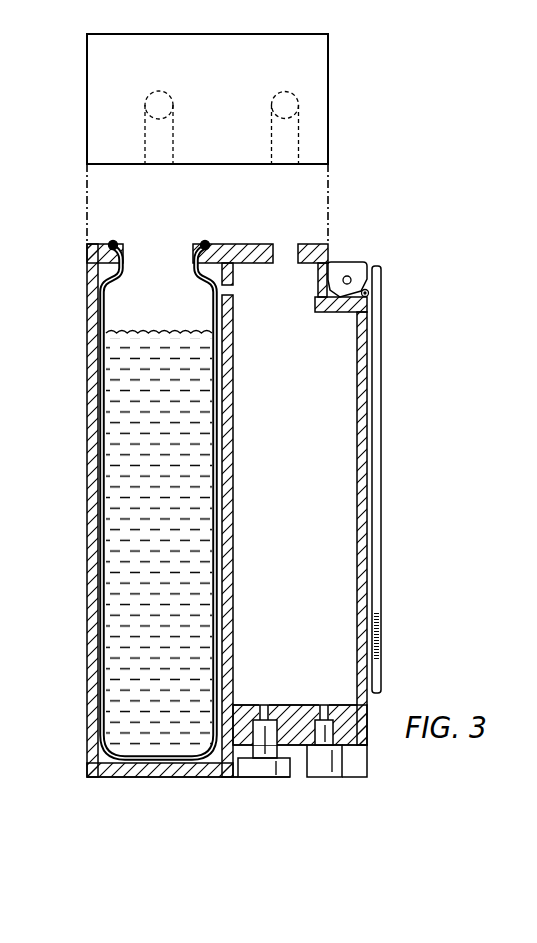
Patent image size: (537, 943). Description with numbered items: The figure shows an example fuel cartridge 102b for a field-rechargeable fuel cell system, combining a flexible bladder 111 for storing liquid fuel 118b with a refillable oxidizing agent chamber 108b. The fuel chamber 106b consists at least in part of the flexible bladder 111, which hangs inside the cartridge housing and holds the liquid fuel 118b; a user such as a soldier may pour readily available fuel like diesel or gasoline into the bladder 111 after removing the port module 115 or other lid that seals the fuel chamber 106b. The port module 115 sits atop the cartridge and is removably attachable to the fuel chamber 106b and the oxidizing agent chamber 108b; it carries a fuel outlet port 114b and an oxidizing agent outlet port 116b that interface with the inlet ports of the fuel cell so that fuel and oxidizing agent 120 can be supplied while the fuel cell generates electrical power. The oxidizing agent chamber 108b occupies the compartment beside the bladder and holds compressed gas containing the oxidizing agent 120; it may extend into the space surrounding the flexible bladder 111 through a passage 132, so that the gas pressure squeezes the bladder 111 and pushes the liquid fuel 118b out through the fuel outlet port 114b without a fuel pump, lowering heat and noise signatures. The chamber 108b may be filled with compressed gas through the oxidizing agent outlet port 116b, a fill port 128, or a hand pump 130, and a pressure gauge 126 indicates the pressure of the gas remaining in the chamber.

The port module 115 is at (328, 64).
The fuel outlet port 114b is at (154, 92).
The oxidizing agent outlet port 116b is at (292, 92).
The fuel cartridge 102b is at (87, 413).
The passage 132 is at (233, 292).
The liquid fuel 118b is at (158, 331).
The flexible bladder 111 is at (102, 705).
The hand pump 130 is at (382, 320).
The oxidizing agent 120 is at (330, 543).
The pressure gauge 126 is at (264, 779).
The oxidizing agent chamber 108b is at (298, 777).
The fill port 128 is at (343, 757).
The fuel chamber 106b is at (148, 779).